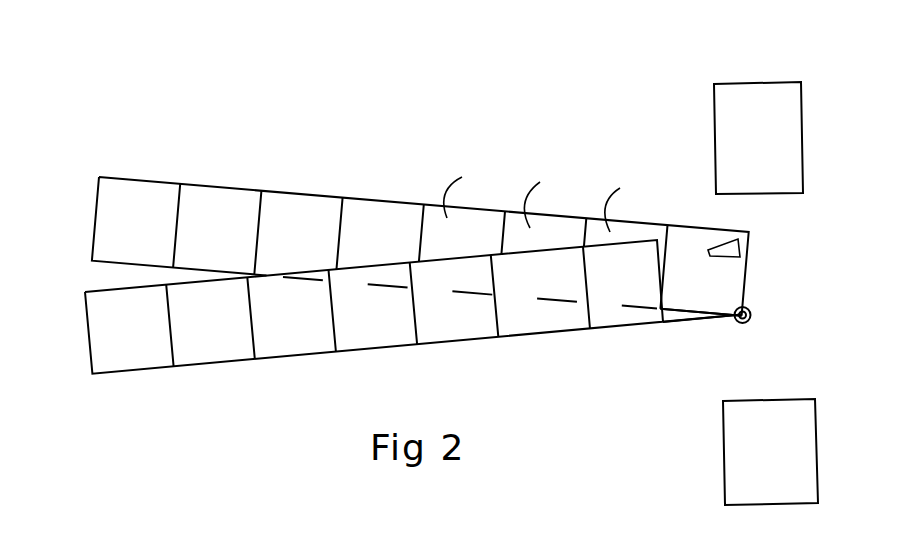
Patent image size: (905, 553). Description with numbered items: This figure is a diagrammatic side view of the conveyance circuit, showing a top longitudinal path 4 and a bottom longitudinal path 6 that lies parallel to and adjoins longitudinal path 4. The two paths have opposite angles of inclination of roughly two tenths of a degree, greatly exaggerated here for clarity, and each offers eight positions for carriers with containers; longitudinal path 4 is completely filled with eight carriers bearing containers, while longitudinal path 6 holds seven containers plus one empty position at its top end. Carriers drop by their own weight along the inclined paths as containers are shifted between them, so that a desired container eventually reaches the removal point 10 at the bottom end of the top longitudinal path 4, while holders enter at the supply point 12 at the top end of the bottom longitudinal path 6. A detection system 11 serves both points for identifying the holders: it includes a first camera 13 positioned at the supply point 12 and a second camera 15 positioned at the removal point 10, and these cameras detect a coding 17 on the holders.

The longitudinal path 4 is at (96, 261).
The longitudinal path 6 is at (198, 357).
The removal point 10 is at (747, 277).
The detection system 11 is at (757, 57).
The supply point 12 is at (682, 322).
The first camera 13 is at (778, 118).
The second camera 15 is at (745, 465).
The coding 17 is at (740, 240).